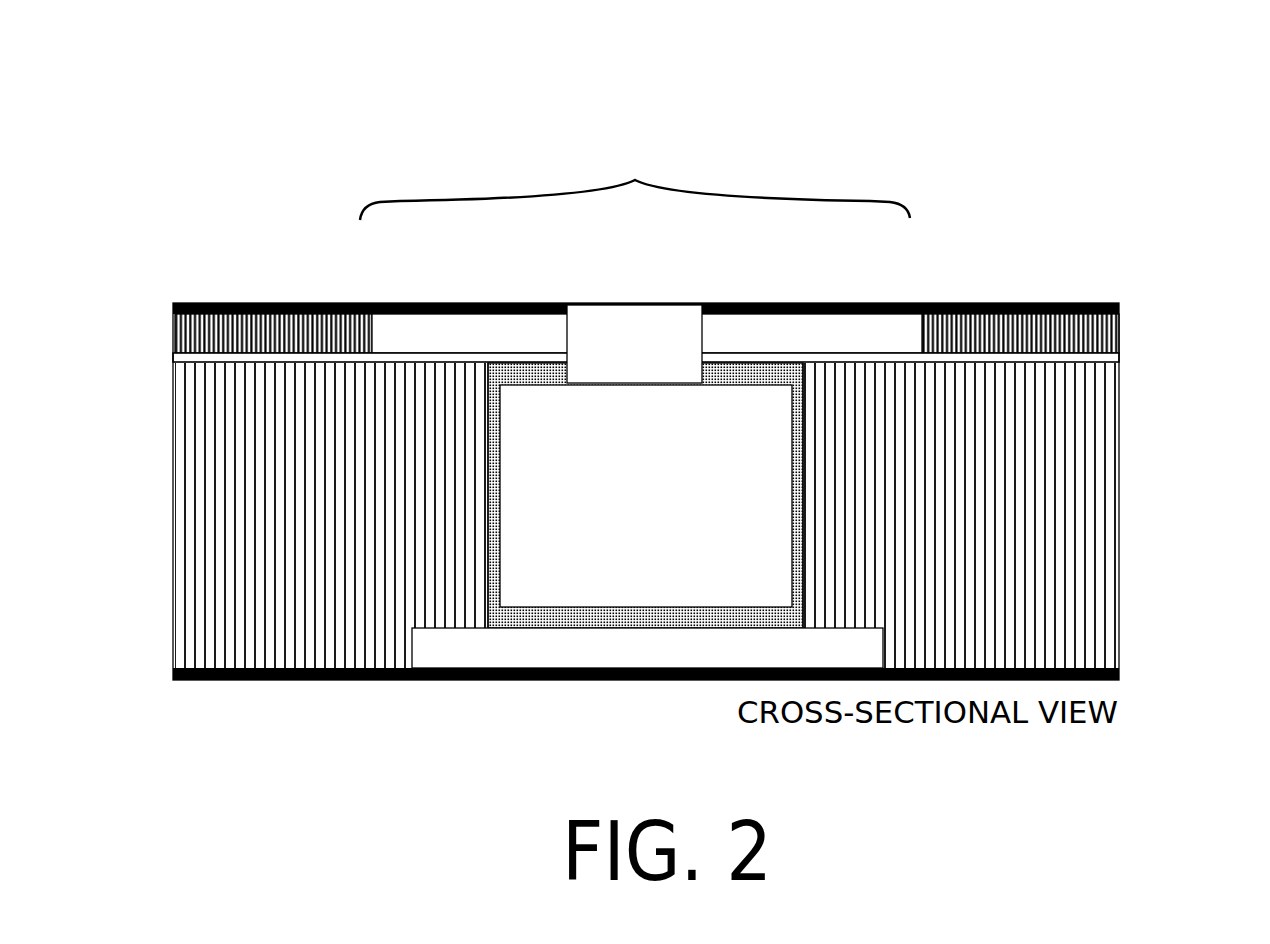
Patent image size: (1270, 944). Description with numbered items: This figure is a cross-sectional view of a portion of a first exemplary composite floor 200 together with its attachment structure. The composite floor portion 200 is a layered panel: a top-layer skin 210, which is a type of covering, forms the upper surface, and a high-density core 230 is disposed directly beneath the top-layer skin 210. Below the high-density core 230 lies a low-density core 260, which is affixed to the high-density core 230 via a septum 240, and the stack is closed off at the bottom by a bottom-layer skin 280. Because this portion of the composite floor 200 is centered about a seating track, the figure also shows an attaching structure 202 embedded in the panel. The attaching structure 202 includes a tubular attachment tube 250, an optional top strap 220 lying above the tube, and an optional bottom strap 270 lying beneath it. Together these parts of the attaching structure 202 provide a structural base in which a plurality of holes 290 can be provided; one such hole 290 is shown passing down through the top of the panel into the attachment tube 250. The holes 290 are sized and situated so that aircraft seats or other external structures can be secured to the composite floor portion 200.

The composite floor portion 200 is at (872, 128).
The attaching structure 202 is at (635, 179).
The top-layer skin 210 is at (970, 300).
The top strap 220 is at (866, 348).
The high-density core 230 is at (170, 333).
The septum 240 is at (1124, 357).
The attachment tube 250 is at (528, 604).
The low-density core 260 is at (281, 623).
The bottom strap 270 is at (773, 660).
The bottom-layer skin 280 is at (287, 683).
The holes 290 is at (662, 362).